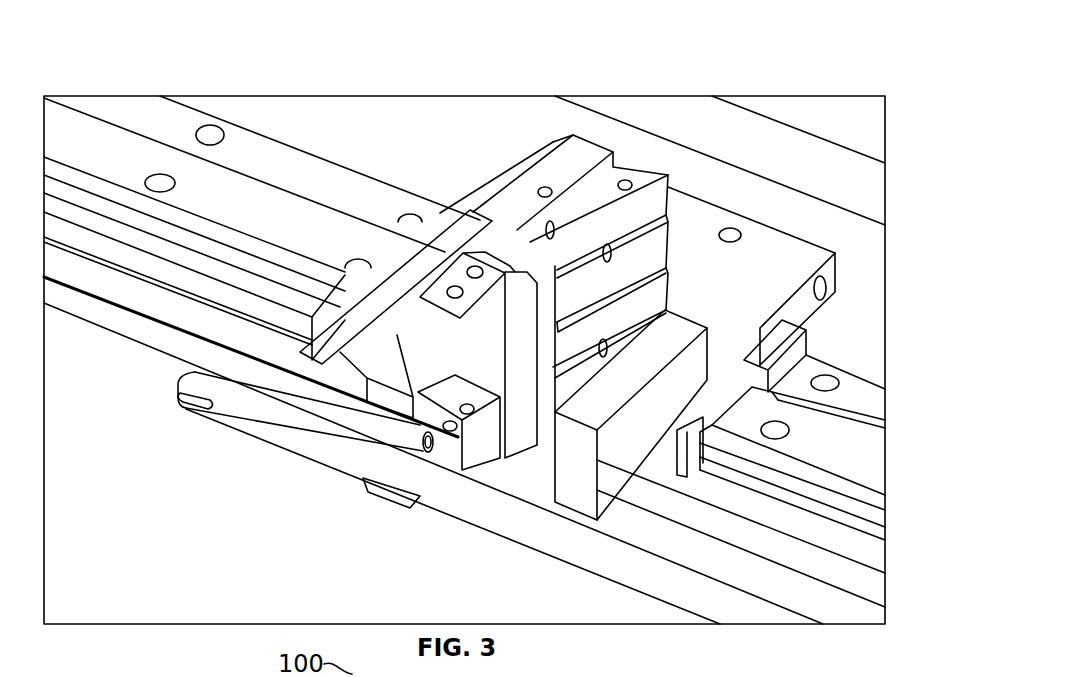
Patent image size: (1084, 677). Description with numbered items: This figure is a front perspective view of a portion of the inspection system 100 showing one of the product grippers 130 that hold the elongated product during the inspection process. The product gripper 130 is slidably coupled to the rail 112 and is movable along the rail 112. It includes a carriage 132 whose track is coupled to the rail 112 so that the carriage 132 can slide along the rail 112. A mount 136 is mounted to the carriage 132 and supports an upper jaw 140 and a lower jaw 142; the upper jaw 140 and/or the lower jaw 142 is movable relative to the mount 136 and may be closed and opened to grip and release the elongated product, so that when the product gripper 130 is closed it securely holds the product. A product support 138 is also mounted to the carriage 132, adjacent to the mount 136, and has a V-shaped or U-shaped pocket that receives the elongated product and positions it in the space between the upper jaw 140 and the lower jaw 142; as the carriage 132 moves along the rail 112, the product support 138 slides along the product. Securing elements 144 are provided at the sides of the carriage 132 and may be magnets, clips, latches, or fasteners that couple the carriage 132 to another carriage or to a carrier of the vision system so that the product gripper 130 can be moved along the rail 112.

The inspection system 100 is at (381, 84).
The rail 112 is at (853, 442).
The product gripper 130 is at (517, 123).
The carriage 132 is at (778, 258).
The mount 136 is at (628, 178).
The product support 138 is at (397, 288).
The upper jaw 140 is at (405, 375).
The lower jaw 142 is at (407, 503).
The securing element 144 is at (820, 292).